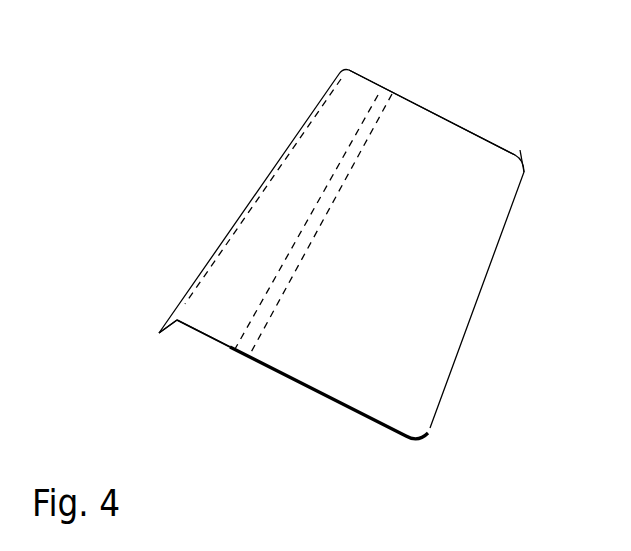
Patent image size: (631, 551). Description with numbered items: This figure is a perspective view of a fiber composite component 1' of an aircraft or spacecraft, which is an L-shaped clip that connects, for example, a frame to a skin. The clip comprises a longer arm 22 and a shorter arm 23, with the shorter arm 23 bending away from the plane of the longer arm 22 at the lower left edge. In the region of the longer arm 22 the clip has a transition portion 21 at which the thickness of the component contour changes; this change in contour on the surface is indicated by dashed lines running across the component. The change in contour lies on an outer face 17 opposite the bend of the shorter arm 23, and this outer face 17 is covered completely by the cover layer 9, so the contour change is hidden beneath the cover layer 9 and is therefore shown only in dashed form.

The fiber composite component 1' is at (548, 102).
The cover layer 9 is at (448, 323).
The outer face 17 is at (463, 243).
The transition portion 21 is at (390, 87).
The longer arm 22 is at (456, 114).
The shorter arm 23 is at (175, 330).